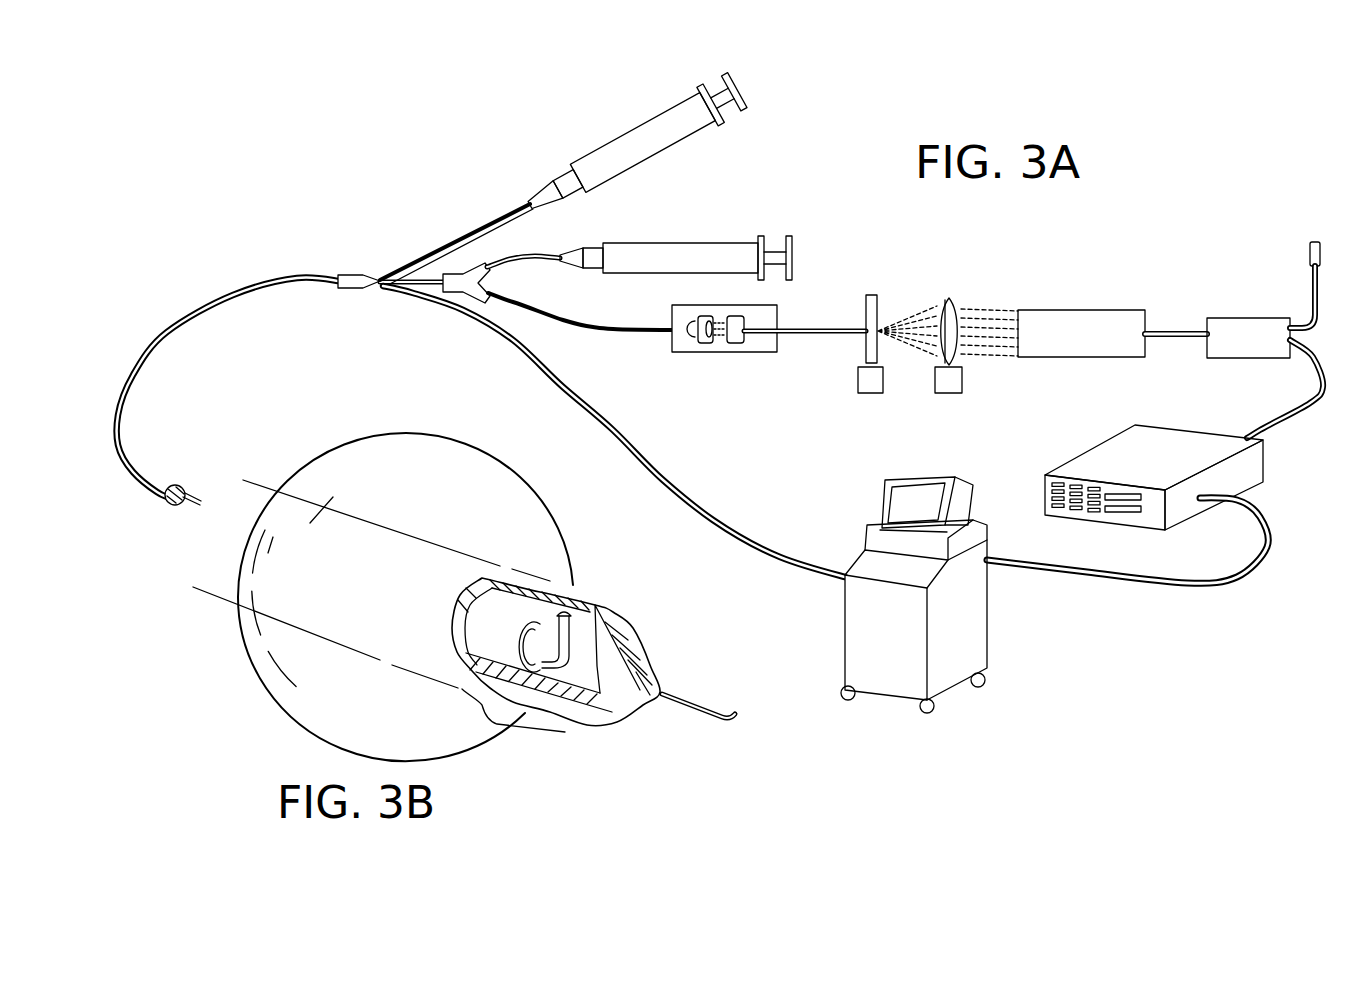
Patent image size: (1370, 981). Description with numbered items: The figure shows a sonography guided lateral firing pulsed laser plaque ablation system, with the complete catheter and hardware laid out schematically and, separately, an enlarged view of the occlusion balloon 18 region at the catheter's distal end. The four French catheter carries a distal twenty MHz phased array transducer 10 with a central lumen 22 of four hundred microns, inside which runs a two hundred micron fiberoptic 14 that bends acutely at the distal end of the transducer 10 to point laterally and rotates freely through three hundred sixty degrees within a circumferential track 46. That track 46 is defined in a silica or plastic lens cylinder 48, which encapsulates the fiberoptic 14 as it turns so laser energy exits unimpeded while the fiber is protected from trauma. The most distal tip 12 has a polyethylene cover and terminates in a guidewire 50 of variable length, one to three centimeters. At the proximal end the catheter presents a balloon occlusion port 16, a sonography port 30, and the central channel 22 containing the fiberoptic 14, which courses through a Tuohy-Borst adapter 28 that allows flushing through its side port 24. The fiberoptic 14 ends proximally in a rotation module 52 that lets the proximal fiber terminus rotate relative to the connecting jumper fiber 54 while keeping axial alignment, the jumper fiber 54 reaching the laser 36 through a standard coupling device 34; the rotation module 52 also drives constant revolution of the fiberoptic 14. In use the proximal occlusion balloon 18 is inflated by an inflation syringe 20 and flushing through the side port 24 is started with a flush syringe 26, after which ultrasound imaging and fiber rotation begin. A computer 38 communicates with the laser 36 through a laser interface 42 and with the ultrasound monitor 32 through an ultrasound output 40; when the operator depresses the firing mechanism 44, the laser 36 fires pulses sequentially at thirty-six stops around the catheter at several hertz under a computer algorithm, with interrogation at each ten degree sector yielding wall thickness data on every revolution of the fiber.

In FIG. 3B, the phased array transducer 10 is at (487, 637).
In FIG. 3B, the distal tip 12 is at (651, 718).
In FIG. 3A, the fiberoptic 14 is at (595, 321).
In FIG. 3B, the fiberoptic 14 is at (580, 643).
In FIG. 3A, the balloon occlusion port 16 is at (443, 249).
In FIG. 3A, the occlusion balloon 18 is at (191, 484).
In FIG. 3B, the occlusion balloon 18 is at (320, 481).
In FIG. 3A, the inflation syringe 20 is at (580, 159).
In FIG. 3A, the central lumen 22 is at (429, 291).
In FIG. 3A, the side port 24 is at (519, 255).
In FIG. 3A, the flush syringe 26 is at (717, 241).
In FIG. 3A, the Tuohy-Borst adapter 28 is at (488, 283).
In FIG. 3A, the sonography port 30 is at (688, 495).
In FIG. 3A, the ultrasound monitor 32 is at (994, 646).
In FIG. 3A, the coupling device 34 is at (940, 290).
In FIG. 3A, the laser 36 is at (1059, 306).
In FIG. 3A, the computer 38 is at (1258, 486).
In FIG. 3A, the ultrasound output 40 is at (1188, 592).
In FIG. 3A, the laser interface 42 is at (1296, 408).
In FIG. 3A, the firing mechanism 44 is at (1306, 254).
In FIG. 3B, the track 46 is at (578, 588).
In FIG. 3B, the lens cylinder 48 is at (518, 734).
In FIG. 3B, the guidewire 50 is at (709, 709).
In FIG. 3A, the rotation module 52 is at (706, 359).
In FIG. 3A, the jumper fiber 54 is at (791, 324).